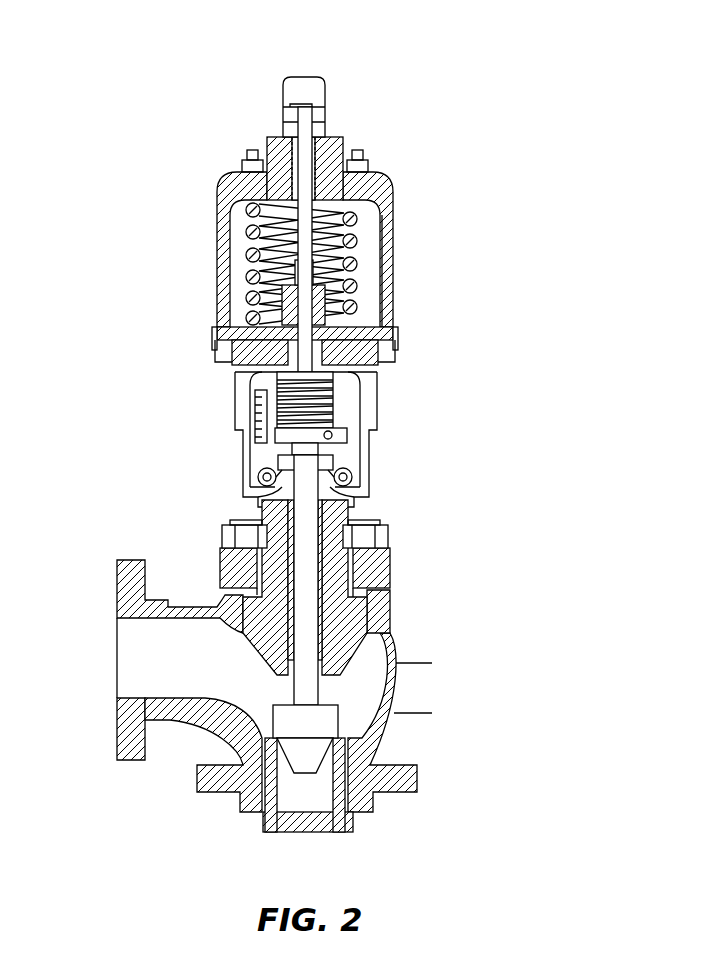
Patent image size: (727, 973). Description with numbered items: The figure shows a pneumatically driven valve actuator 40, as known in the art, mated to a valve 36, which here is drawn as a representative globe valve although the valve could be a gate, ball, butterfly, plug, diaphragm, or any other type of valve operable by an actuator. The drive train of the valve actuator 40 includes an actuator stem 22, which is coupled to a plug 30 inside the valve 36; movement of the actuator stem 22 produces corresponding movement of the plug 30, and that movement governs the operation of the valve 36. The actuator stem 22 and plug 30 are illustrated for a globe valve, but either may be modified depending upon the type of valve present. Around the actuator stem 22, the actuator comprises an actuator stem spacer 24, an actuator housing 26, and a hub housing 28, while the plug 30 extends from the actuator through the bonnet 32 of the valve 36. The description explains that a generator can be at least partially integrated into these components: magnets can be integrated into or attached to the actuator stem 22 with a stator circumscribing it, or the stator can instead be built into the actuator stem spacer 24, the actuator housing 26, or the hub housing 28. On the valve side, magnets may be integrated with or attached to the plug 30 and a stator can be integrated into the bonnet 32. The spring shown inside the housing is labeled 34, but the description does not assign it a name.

The actuator stem 22 is at (388, 312).
The actuator stem spacer 24 is at (322, 297).
The actuator housing 26 is at (217, 228).
The hub housing 28 is at (330, 175).
The plug 30 is at (316, 690).
The bonnet 32 is at (262, 642).
The spring 34 is at (248, 262).
The valve 36 is at (393, 668).
The valve actuator 40 is at (463, 62).